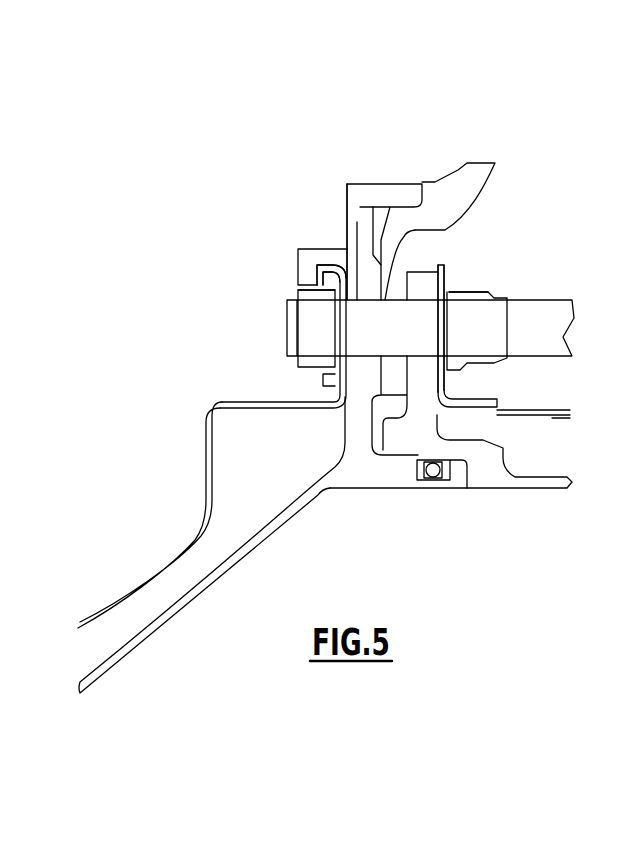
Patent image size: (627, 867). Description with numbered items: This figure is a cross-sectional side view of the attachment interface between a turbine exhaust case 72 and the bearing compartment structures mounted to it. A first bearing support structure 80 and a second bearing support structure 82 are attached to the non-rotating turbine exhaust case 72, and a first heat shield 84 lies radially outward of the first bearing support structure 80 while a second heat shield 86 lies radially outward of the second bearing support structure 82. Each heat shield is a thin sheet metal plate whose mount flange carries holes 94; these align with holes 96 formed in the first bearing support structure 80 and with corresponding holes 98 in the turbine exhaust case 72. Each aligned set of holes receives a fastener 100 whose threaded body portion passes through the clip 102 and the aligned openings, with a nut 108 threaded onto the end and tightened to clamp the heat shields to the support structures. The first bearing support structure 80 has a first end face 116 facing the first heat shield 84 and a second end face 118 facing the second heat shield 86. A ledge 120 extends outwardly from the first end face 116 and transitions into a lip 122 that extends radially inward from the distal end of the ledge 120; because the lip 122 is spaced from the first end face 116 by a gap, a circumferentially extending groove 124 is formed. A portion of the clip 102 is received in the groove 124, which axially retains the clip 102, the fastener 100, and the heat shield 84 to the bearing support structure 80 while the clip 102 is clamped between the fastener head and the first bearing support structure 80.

The turbine exhaust case 72 is at (460, 186).
The first bearing support structure 80 is at (359, 196).
The second bearing support structure 82 is at (433, 273).
The first heat shield 84 is at (206, 468).
The second heat shield 86 is at (483, 412).
The holes 94 is at (347, 350).
The holes 96 is at (357, 222).
The holes 98 is at (428, 268).
The fastener 100 is at (392, 331).
The clip 102 is at (327, 388).
The nut 108 is at (455, 290).
The first end face 116 is at (344, 192).
The second end face 118 is at (378, 207).
The ledge 120 is at (312, 257).
The lip 122 is at (310, 292).
The groove 124 is at (322, 273).